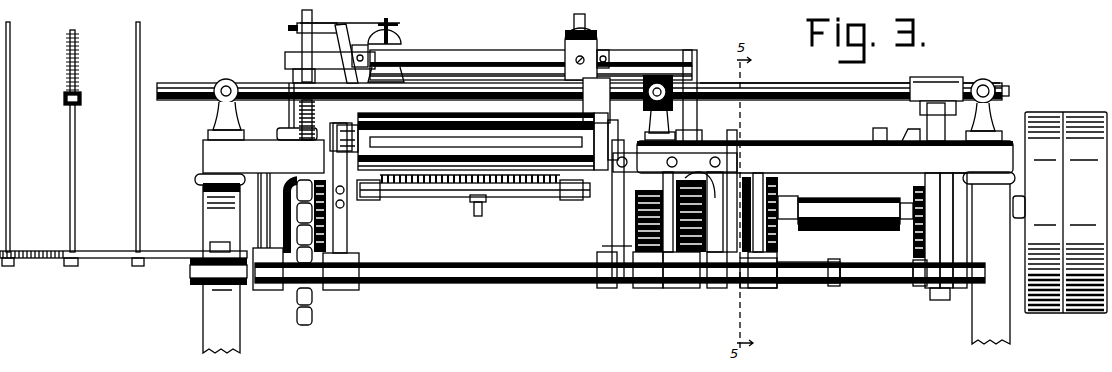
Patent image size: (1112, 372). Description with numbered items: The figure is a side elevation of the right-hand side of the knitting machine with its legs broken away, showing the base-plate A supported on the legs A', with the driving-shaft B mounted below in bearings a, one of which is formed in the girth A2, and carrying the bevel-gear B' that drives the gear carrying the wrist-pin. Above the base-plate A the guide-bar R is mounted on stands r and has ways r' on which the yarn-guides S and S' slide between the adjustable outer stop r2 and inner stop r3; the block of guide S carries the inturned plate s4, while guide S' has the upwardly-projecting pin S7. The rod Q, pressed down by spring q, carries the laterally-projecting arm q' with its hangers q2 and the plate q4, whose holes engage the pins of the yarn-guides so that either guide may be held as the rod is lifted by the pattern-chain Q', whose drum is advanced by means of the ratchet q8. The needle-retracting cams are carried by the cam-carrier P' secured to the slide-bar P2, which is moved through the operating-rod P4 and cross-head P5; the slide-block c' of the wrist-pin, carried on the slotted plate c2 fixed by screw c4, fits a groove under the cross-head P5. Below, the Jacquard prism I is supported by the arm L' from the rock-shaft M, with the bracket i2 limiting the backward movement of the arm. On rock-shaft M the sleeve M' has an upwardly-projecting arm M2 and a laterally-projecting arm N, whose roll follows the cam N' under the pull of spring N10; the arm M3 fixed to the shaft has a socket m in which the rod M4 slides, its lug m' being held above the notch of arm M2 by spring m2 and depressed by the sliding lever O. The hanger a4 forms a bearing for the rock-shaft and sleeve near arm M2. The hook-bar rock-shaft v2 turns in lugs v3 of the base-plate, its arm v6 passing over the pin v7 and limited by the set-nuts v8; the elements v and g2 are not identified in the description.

The base-plate A is at (605, 162).
The supporting-legs A' is at (606, 268).
The girth A2 is at (848, 182).
The slide-bar P2 is at (204, 95).
The cam-carrier P' is at (596, 100).
The operating-rod P4 is at (810, 106).
The cross-head P5 is at (940, 78).
The rod Q is at (293, 45).
The pattern-chain Q' is at (300, 251).
The spring q is at (303, 104).
The laterally-projecting arm q' is at (306, 34).
The hanger q2 is at (338, 53).
The plate q4 is at (350, 24).
The ratchet q8 is at (305, 247).
The stand r is at (488, 87).
The way r' is at (531, 49).
The outer stop r2 is at (359, 46).
The inner stop r3 is at (612, 48).
The guide-bar R is at (452, 48).
The yarn-guide S is at (587, 48).
The yarn-guide S' is at (392, 52).
The upwardly-projecting pin S7 is at (389, 24).
The inturned plate s4 is at (572, 20).
The grooved octagonal prism I is at (456, 120).
The rack bar v is at (502, 192).
The rock-shaft v2 is at (452, 203).
The lug v3 is at (382, 195).
The arm v6 is at (510, 212).
The pin v7 is at (486, 217).
The set-nuts v8 is at (470, 210).
The arm L' is at (473, 216).
The rock-shaft M is at (620, 284).
The sleeve M' is at (706, 289).
The upwardly-projecting arm M2 is at (668, 292).
The arm M3 is at (638, 292).
The rod M4 is at (632, 236).
The socket m is at (611, 246).
The lug m' is at (756, 160).
The spring m2 is at (632, 218).
The sliding lever O is at (630, 205).
The cam g2 is at (704, 191).
The bracket i2 is at (667, 162).
The laterally-projecting arm N is at (852, 272).
The cam N' is at (771, 261).
The spring N10 is at (782, 170).
The bearing a is at (852, 224).
The hanger a4 is at (749, 220).
The driving-shaft B is at (920, 230).
The bevel-gear B' is at (926, 240).
The slide-block c' is at (949, 122).
The slotted plate c2 is at (910, 138).
The screw c4 is at (881, 126).